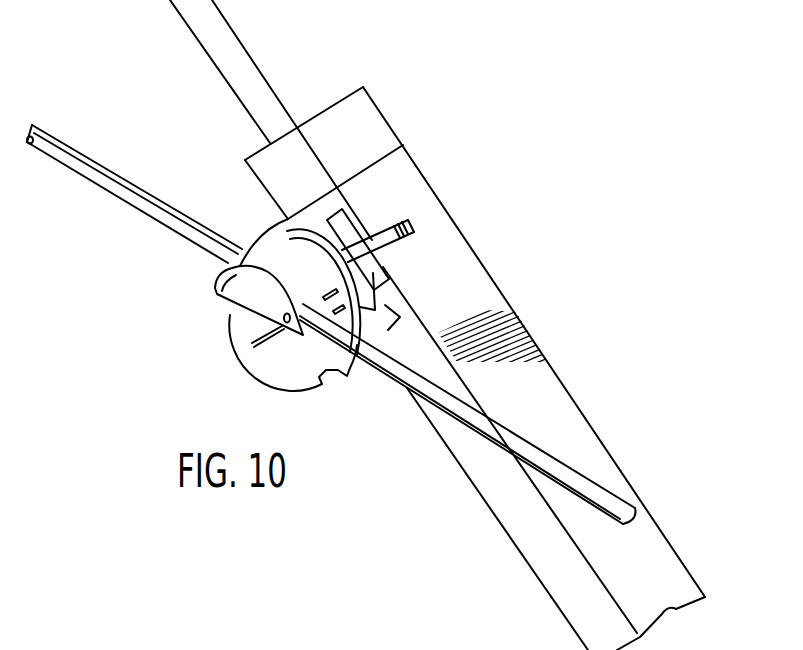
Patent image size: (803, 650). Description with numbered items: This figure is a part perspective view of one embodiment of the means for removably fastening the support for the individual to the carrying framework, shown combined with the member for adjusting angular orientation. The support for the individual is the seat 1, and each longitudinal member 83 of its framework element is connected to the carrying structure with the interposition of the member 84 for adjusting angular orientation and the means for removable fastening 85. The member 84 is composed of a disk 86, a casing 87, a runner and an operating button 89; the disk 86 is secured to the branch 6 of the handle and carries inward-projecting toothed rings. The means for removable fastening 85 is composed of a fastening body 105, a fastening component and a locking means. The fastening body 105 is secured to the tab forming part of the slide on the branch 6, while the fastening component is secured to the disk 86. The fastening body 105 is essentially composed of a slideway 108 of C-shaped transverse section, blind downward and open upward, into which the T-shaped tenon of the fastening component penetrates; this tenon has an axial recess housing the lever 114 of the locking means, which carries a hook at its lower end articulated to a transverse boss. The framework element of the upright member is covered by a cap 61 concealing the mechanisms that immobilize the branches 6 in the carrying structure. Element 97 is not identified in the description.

The seat 1 is at (123, 154).
The branch 6 is at (259, 97).
The cap 61 is at (578, 436).
The longitudinal member 83 is at (134, 195).
The member for adjusting angular orientation 84 is at (227, 355).
The means for removable fastening 85 is at (369, 230).
The disk 86 is at (272, 246).
The casing 87 is at (230, 288).
The operating button 89 is at (397, 352).
The fastening body 105 is at (393, 308).
The slideway 108 is at (363, 347).
The lever 114 is at (415, 228).
The element 97 is at (227, 643).